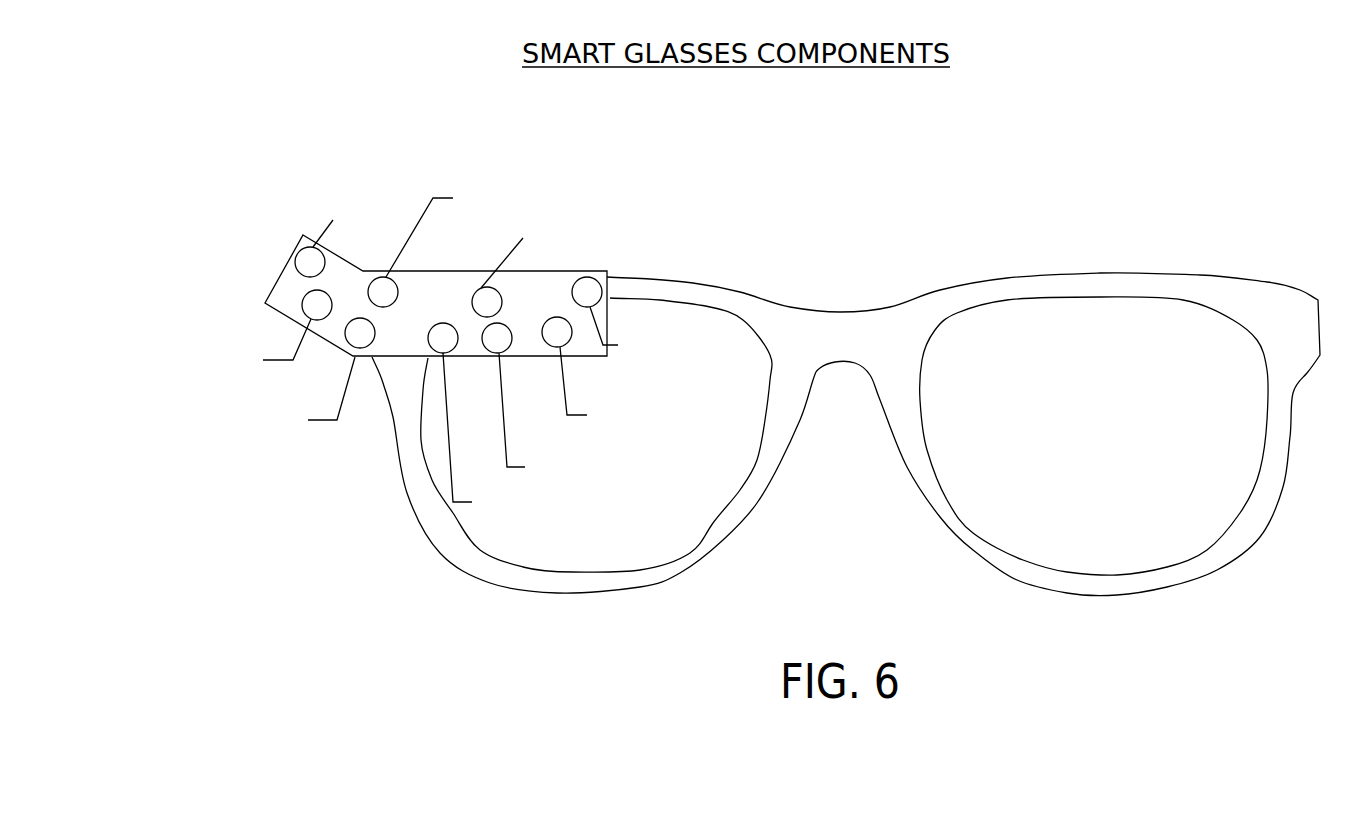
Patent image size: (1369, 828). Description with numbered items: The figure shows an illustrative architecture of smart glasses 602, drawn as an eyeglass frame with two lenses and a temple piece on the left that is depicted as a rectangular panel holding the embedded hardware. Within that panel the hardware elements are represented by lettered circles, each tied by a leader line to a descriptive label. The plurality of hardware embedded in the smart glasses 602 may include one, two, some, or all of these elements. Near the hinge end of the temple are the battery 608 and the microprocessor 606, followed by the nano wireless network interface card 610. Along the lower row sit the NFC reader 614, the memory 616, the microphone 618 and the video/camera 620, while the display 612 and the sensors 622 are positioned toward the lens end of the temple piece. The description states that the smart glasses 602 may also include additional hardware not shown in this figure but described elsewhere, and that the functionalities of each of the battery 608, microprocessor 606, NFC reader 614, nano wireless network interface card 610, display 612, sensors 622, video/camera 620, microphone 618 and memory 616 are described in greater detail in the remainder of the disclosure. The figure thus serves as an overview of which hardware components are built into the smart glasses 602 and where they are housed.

The smart glasses 602 is at (1117, 272).
The microprocessor 606 is at (167, 333).
The battery 608 is at (293, 205).
The nano wireless network interface card 610 is at (910, 199).
The display 612 is at (627, 240).
The NFC reader 614 is at (228, 437).
The memory 616 is at (528, 515).
The microphone 618 is at (638, 480).
The video/camera 620 is at (670, 415).
The sensors 622 is at (723, 350).